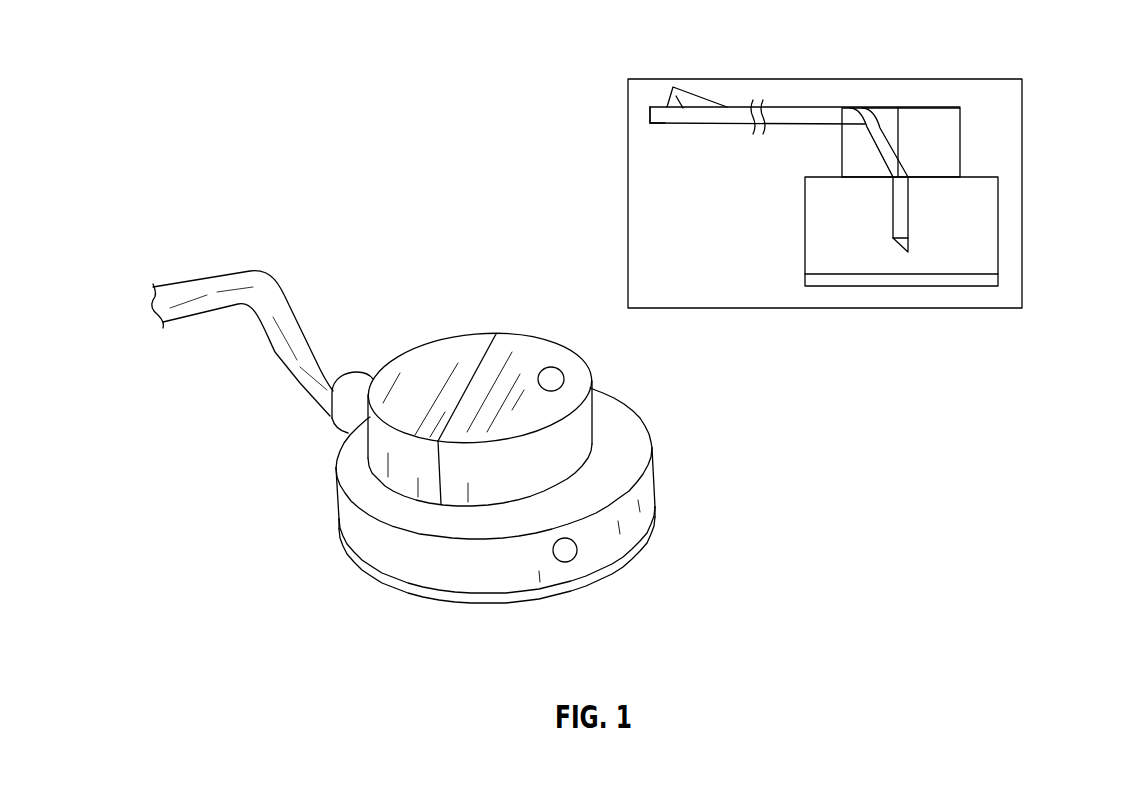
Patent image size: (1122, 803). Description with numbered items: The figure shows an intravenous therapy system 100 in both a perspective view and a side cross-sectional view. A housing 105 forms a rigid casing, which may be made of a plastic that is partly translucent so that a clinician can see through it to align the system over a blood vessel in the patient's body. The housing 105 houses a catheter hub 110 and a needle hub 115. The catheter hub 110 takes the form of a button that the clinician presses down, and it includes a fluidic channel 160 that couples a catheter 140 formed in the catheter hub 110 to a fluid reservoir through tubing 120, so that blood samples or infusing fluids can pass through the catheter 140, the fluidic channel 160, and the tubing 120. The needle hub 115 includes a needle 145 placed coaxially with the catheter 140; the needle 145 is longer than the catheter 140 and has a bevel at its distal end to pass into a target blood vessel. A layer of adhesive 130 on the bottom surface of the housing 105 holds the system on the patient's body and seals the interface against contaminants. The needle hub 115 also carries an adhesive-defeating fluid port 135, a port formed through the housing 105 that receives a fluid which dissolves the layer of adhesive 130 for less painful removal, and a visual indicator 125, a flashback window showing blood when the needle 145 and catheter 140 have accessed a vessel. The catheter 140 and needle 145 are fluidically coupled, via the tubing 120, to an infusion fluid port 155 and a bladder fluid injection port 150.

The intravenous therapy system 100 is at (158, 238).
The housing 105 is at (352, 532).
The catheter hub 110 is at (368, 452).
The needle hub 115 is at (575, 423).
The tubing 120 is at (173, 318).
The visual indicator 125 is at (556, 378).
The layer of adhesive 130 is at (385, 582).
The adhesive-defeating fluid port 135 is at (580, 546).
The catheter 140 is at (908, 207).
The needle 145 is at (908, 250).
The bladder fluid injection port 150 is at (683, 100).
The infusion fluid port 155 is at (663, 118).
The fluidic channel 160 is at (889, 158).